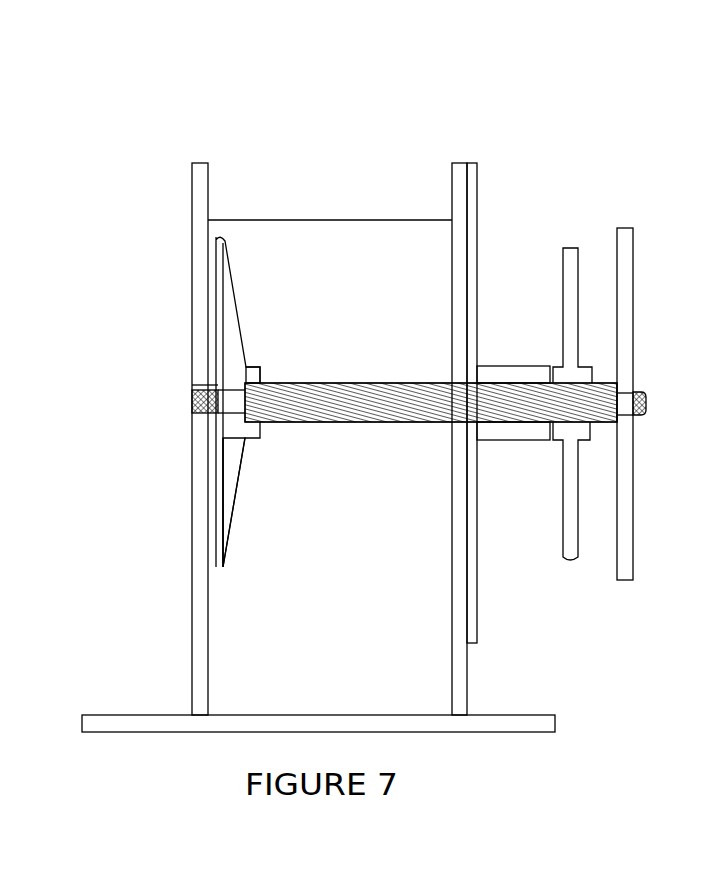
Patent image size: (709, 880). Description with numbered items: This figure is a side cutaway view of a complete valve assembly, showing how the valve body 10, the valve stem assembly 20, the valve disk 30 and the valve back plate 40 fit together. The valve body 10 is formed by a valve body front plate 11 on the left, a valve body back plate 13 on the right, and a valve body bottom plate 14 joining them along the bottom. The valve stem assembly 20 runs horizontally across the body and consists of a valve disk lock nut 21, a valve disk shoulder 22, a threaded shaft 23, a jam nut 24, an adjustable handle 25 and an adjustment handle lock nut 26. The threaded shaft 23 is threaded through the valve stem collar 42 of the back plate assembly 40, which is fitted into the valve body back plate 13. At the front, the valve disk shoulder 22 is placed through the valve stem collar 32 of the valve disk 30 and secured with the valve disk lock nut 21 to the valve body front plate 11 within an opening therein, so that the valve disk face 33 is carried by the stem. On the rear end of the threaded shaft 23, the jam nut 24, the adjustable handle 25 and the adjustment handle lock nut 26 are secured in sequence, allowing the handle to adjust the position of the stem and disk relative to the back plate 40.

The valve body 10 is at (300, 214).
The valve body front plate 11 is at (208, 163).
The valve body back plate 13 is at (455, 163).
The valve body bottom plate 14 is at (128, 715).
The valve stem assembly 20 is at (378, 434).
The valve disk lock nut 21 is at (186, 378).
The valve disk shoulder 22 is at (192, 418).
The threaded shaft 23 is at (360, 383).
The jam nut 24 is at (561, 311).
The adjustable handle 25 is at (617, 248).
The adjustment handle lock nut 26 is at (639, 398).
The valve disk 30 is at (248, 483).
The valve stem collar 32 is at (225, 568).
The valve disk face 33 is at (259, 425).
The valve back plate 40 is at (488, 600).
The valve stem collar 42 is at (512, 442).